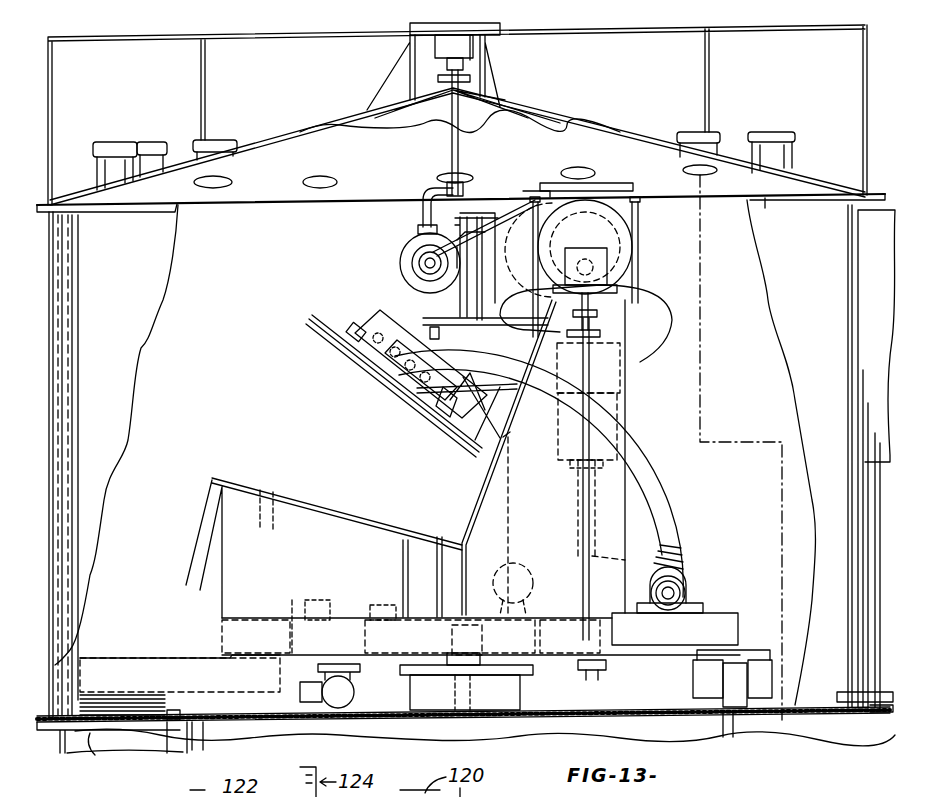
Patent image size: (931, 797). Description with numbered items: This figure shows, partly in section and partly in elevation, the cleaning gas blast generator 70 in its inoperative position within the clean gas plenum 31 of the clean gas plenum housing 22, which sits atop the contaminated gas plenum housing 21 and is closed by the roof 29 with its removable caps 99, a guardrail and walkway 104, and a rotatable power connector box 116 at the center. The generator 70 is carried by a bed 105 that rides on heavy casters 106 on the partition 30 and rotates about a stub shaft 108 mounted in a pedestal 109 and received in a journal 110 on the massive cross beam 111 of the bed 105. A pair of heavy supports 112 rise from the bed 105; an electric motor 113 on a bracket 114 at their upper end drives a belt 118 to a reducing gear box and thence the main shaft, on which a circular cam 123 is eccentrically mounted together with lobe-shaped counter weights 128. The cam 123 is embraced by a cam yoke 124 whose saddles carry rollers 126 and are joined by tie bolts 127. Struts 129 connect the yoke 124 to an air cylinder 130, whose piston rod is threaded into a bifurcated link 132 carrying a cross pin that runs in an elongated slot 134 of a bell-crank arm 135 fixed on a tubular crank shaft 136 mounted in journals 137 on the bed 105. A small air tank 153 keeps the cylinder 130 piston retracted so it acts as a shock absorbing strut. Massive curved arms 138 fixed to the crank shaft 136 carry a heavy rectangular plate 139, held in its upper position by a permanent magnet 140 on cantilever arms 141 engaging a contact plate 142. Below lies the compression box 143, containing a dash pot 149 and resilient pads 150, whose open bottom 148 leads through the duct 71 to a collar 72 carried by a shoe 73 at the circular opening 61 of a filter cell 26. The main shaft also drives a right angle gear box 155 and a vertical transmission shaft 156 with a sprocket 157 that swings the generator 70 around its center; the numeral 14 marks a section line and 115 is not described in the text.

The guardrail and walkway 104 is at (789, 27).
The rotatable power connector box 116 is at (478, 44).
The cap 99 is at (126, 143).
The roof 29 is at (303, 130).
The drive shaft 115 is at (461, 140).
The cam yoke 124 is at (641, 182).
The section line 14 is at (732, 183).
The rollers 126 is at (538, 190).
The belt 118 is at (468, 222).
The bracket 114 is at (432, 226).
The tie bolts 127 is at (545, 248).
The electric motor 113 is at (405, 258).
The right angle gear box 155 is at (588, 252).
The circular cam 123 is at (630, 222).
The contact plate 142 is at (345, 332).
The rectangular plate 139 is at (332, 338).
The permanent magnet 140 is at (375, 311).
The cantilever arms 141 is at (428, 320).
The counter weights 128 is at (652, 338).
The struts 129 is at (556, 380).
The air cylinder 130 is at (560, 420).
The vertical transmission shaft 156 is at (585, 437).
The bifurcated link 132 is at (582, 493).
The supports 112 is at (482, 492).
The curved arms 138 is at (671, 487).
The gas blast generator 70 is at (654, 428).
The bell-crank arm 135 is at (643, 560).
The tubular crank shaft 136 is at (676, 577).
The journals 137 is at (690, 590).
The bed 105 is at (725, 612).
The air tank 153 is at (522, 562).
The elongated slot 134 is at (580, 592).
The compression box 143 is at (236, 473).
The cross beam 111 is at (435, 638).
The journal 110 is at (480, 638).
The resilient pads 150 is at (272, 612).
The dash pot 149 is at (345, 612).
The open bottom 148 is at (297, 622).
The duct 71 is at (148, 658).
The collar 72 is at (82, 702).
The shoe 73 is at (177, 714).
The pedestal 109 is at (520, 690).
The stub shaft 108 is at (460, 694).
The sprocket 157 is at (598, 672).
The casters 106 is at (342, 710).
The partition 30 is at (275, 710).
The clean gas plenum housing 22 is at (118, 297).
The contaminated gas plenum housing 21 is at (55, 748).
The filter cell 26 is at (80, 764).
The circular opening 61 is at (90, 736).
The clean gas plenum 31 is at (757, 325).